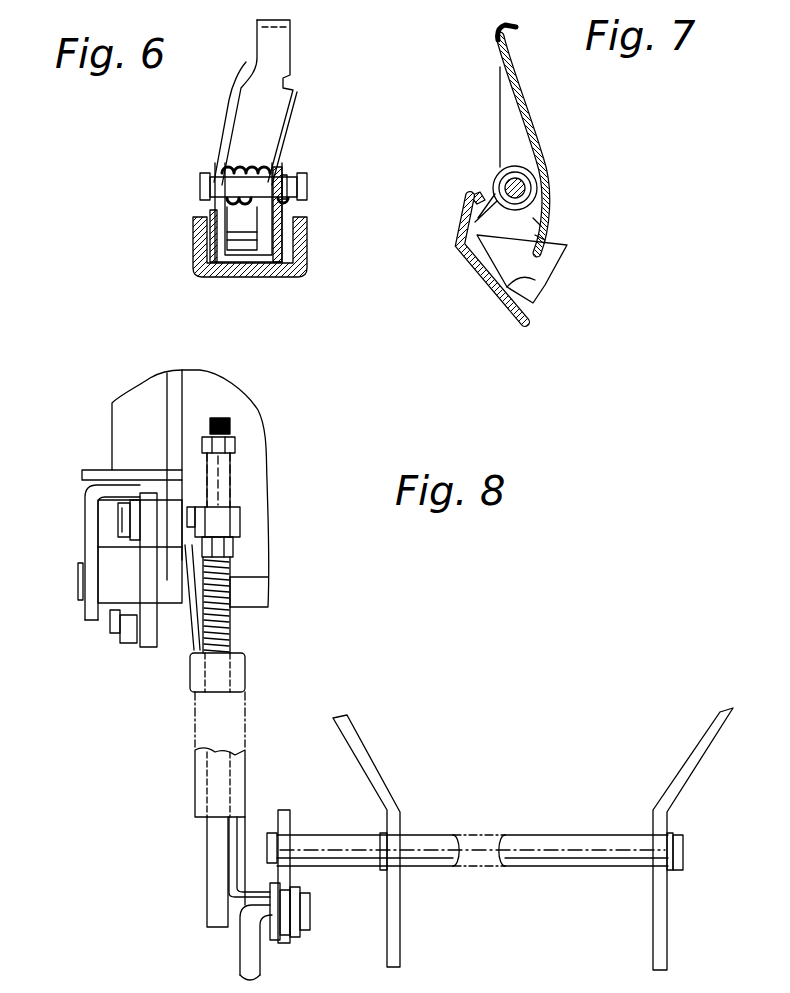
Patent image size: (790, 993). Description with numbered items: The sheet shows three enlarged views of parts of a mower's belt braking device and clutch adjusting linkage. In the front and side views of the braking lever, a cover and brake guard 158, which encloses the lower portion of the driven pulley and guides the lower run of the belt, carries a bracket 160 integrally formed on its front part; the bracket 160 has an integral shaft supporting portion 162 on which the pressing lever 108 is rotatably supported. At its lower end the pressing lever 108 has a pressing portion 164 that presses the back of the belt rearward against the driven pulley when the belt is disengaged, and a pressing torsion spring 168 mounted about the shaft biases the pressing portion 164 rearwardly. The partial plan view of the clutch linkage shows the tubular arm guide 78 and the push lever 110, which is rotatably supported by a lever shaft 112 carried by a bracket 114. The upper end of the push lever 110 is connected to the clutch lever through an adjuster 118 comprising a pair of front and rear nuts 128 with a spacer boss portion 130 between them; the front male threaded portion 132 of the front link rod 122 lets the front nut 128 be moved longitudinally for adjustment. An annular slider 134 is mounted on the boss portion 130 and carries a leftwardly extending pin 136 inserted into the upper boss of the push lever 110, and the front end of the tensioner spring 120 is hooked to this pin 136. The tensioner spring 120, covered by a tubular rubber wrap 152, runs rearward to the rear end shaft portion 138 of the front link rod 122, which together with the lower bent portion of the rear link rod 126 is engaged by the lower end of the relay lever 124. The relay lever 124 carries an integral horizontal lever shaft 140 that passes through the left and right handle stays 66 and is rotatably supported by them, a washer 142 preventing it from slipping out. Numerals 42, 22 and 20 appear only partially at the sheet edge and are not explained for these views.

In FIG. 6, the pressing lever 108 is at (290, 52).
In FIG. 7, the pressing lever 108 is at (527, 98).
In FIG. 6, the pressing torsion spring 168 is at (240, 165).
In FIG. 7, the pressing torsion spring 168 is at (495, 198).
In FIG. 6, the shaft supporting portion 162 is at (285, 150).
In FIG. 7, the shaft supporting portion 162 is at (513, 228).
In FIG. 7, the pressing portion 164 is at (557, 212).
In FIG. 6, the bracket 160 is at (280, 262).
In FIG. 7, the bracket 160 is at (503, 258).
In FIG. 6, the cover and brake guard 158 is at (300, 276).
In FIG. 7, the cover and brake guard 158 is at (500, 305).
In FIG. 8, the arm guide 78 is at (135, 400).
In FIG. 8, the front male threaded portion 132 is at (222, 418).
In FIG. 8, the front and rear nuts 128 is at (236, 445).
In FIG. 8, the spacer boss portion 130 is at (236, 470).
In FIG. 8, the adjuster 118 is at (285, 481).
In FIG. 8, the slider 134 is at (243, 520).
In FIG. 8, the pin 136 is at (118, 520).
In FIG. 8, the lever shaft 112 is at (78, 598).
In FIG. 8, the bracket 114 is at (90, 622).
In FIG. 8, the push lever 110 is at (148, 643).
In FIG. 8, the tensioner spring 120 is at (192, 627).
In FIG. 8, the tubular rubber wrap 152 is at (245, 678).
In FIG. 8, the front link rod 122 is at (208, 840).
In FIG. 8, the rear end shaft portion 138 is at (258, 895).
In FIG. 8, the rear link rod 126 is at (240, 952).
In FIG. 8, the relay lever 124 is at (283, 810).
In FIG. 8, the lever shaft 140 is at (540, 850).
In FIG. 8, the washer 142 is at (383, 830).
In FIG. 8, the handle stay 66 is at (400, 915).
In FIG. 8, the frame member 42 is at (514, 991).
In FIG. 8, the frame member 22 is at (596, 991).
In FIG. 8, the frame 20 is at (690, 990).